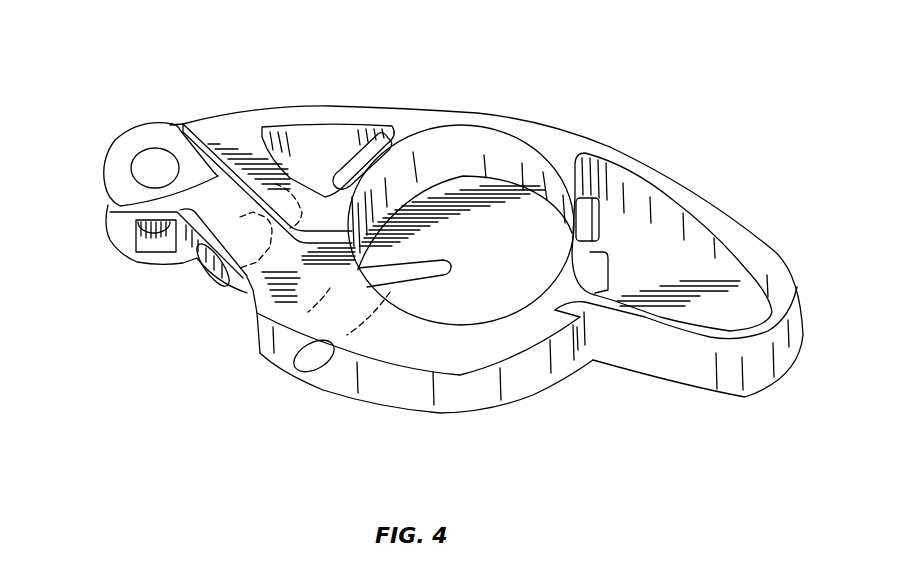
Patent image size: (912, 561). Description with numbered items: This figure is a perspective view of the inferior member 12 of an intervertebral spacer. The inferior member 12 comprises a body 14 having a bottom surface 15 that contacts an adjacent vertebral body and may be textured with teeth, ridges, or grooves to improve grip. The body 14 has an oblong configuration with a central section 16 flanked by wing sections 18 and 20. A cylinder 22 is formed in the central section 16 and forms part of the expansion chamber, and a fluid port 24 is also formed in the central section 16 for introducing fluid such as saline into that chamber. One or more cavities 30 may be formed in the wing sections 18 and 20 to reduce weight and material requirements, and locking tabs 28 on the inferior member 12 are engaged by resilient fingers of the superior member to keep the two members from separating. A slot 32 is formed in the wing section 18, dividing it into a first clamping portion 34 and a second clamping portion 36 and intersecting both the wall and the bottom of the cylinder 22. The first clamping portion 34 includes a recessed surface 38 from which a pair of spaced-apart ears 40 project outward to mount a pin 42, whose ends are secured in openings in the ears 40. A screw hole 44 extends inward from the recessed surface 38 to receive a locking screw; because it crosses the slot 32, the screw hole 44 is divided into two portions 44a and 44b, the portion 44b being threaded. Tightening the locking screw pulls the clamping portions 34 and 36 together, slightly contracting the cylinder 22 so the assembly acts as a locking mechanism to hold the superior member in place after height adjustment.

The inferior member 12 is at (676, 51).
The body 14 is at (663, 162).
The bottom surface 15 is at (478, 413).
The central section 16 is at (537, 123).
The wing section 18 is at (257, 110).
The wing section 20 is at (748, 222).
The cylinder 22 is at (478, 112).
The fluid port 24 is at (297, 367).
The locking tabs 28 is at (590, 220).
The cavities 30 is at (760, 258).
The slot 32 is at (157, 125).
The first clamping portion 34 is at (133, 211).
The second clamping portion 36 is at (218, 127).
The recessed surface 38 is at (247, 294).
The ears 40 is at (130, 160).
The pin 42 is at (152, 232).
The screw hole 44 is at (200, 272).
The screw hole portion 44a is at (253, 294).
The screw hole portion 44b is at (299, 195).